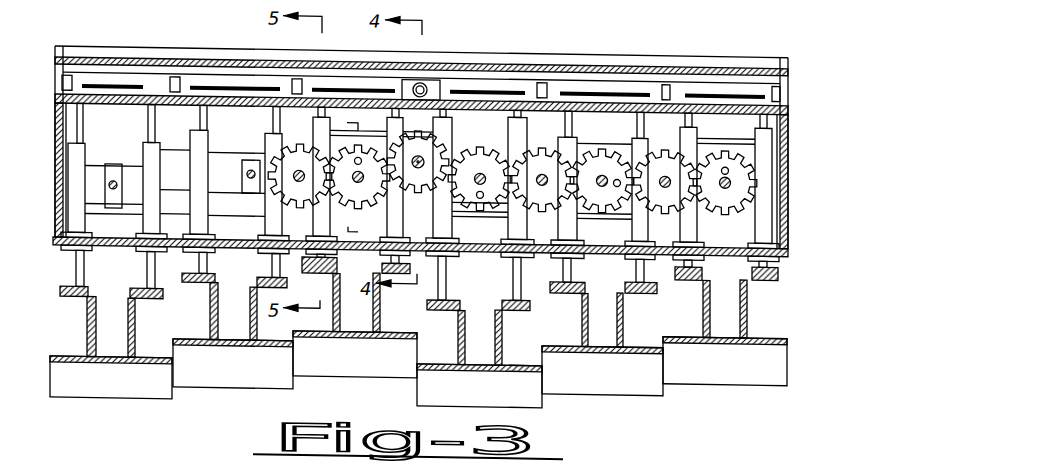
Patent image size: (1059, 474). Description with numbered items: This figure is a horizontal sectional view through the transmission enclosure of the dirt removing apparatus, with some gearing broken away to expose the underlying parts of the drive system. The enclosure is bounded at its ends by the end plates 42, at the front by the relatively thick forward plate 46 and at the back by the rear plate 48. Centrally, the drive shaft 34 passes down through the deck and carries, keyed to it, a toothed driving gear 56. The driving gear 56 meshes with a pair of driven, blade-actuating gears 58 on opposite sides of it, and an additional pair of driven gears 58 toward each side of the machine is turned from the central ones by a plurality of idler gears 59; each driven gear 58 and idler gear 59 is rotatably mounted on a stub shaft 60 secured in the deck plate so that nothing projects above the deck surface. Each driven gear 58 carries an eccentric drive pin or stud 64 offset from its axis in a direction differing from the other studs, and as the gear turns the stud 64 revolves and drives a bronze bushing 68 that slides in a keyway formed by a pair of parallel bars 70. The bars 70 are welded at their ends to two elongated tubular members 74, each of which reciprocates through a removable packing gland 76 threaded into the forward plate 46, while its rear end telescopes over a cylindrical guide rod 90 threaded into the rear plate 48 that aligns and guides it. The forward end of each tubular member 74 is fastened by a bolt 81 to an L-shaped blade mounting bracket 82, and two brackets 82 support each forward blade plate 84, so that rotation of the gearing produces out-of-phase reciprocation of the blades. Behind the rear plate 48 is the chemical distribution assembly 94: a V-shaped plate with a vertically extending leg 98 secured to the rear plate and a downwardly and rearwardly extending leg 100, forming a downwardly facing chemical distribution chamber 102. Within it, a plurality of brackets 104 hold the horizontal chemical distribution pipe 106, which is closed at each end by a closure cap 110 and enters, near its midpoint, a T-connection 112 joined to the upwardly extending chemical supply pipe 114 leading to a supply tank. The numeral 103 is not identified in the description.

The drive shaft 34 is at (419, 178).
The end plate 42 is at (57, 156).
The forward plate 46 is at (99, 247).
The rear plate 48 is at (200, 108).
The driving gear 56 is at (430, 146).
The driven, blade-actuating gear 58 is at (357, 205).
The idler gear 59 is at (314, 145).
The stub shaft 60 is at (298, 176).
The eccentric drive pin or stud 64 is at (114, 184).
The bronze bushing 68 is at (116, 163).
The parallel bar 70 is at (93, 163).
The tubular member 74 is at (64, 192).
The packing gland 76 is at (204, 250).
The bolt 81 is at (205, 283).
The L-shaped blade mounting bracket 82 is at (128, 320).
The forward blade plate 84 is at (124, 385).
The guide rod 90 is at (148, 117).
The chemical distribution assembly 94 is at (512, 57).
The vertically extending leg 98 is at (598, 94).
The downwardly and rearwardly extending leg 100 is at (128, 46).
The chemical distribution enclosure or chamber 102 is at (280, 40).
The end cap 103 is at (57, 82).
The bracket 104 is at (545, 75).
The chemical distribution pipe 106 is at (178, 74).
The closure cap 110 is at (74, 74).
The T-connection 112 is at (436, 74).
The chemical supply pipe 114 is at (416, 76).